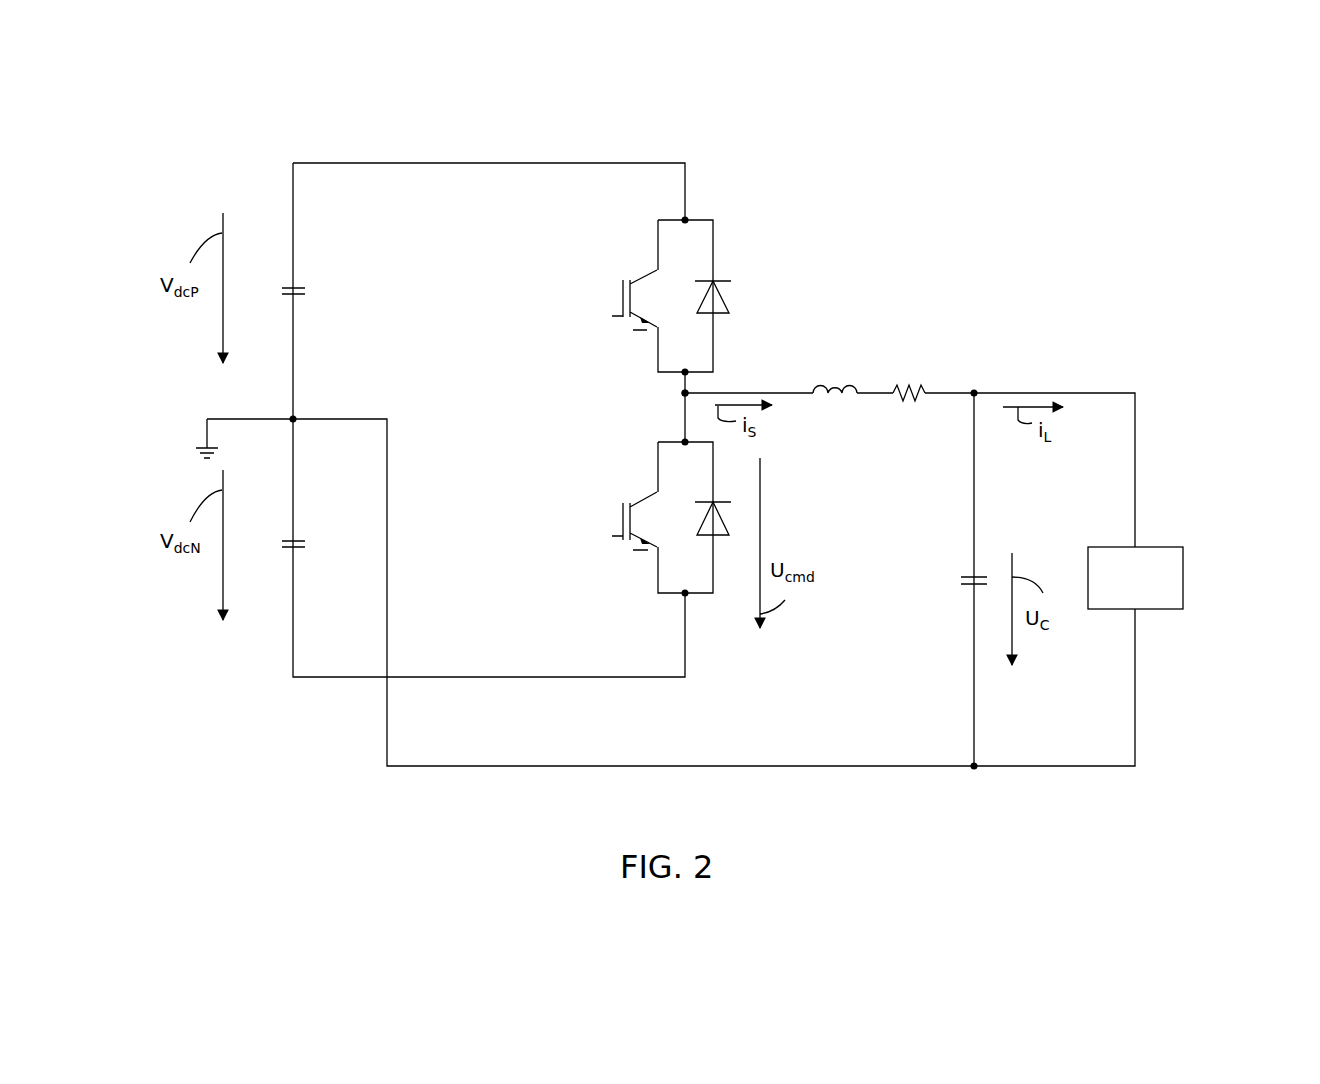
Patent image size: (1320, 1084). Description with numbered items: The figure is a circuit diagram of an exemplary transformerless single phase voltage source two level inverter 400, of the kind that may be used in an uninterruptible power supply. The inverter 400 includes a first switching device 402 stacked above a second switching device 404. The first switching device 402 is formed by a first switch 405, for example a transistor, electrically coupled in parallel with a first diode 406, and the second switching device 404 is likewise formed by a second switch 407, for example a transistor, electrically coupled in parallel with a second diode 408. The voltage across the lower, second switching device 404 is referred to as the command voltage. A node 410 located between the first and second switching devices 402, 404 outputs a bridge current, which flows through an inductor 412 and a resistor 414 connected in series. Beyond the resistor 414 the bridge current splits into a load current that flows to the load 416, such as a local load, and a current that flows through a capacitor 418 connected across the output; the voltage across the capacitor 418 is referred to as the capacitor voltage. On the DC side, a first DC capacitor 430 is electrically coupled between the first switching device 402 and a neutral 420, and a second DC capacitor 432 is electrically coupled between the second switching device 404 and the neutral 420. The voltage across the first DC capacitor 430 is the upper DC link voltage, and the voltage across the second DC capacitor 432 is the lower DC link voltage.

The single phase voltage source two level inverter 400 is at (1008, 172).
The first switching device 402 is at (717, 263).
The second switching device 404 is at (648, 494).
The first switch 405 is at (642, 276).
The first diode 406 is at (723, 295).
The second switch 407 is at (642, 497).
The second diode 408 is at (723, 515).
The node 410 is at (683, 393).
The inductor 412 is at (834, 385).
The resistor 414 is at (909, 385).
The load 416 is at (1183, 578).
The capacitor 418 is at (968, 578).
The neutral 420 is at (215, 418).
The first DC capacitor 430 is at (300, 287).
The second DC capacitor 432 is at (300, 540).